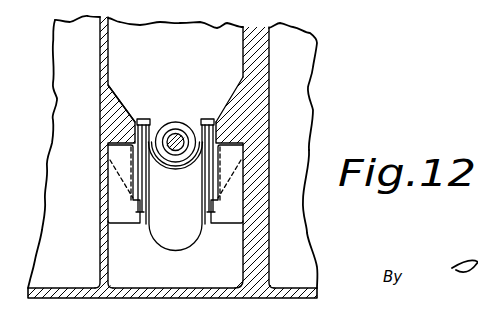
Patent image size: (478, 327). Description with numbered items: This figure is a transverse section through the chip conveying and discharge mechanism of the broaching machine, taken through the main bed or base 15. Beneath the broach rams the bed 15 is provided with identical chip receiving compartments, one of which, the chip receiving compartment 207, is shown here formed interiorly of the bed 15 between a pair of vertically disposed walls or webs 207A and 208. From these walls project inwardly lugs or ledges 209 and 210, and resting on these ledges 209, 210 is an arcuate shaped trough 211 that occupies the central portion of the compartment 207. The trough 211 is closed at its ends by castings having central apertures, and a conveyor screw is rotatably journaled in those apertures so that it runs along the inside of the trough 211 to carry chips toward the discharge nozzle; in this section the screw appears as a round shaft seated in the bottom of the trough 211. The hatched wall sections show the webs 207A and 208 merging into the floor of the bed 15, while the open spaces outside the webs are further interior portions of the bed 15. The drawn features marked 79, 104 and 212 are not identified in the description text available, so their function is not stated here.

The main bed or base 15 is at (294, 266).
The housing top edge 79 is at (162, 3).
The partition wall top 104 is at (116, 6).
The chip receiving compartment 207 is at (210, 37).
The wall or web 207A is at (105, 61).
The wall or web 208 is at (262, 77).
The lug or ledge 209 is at (103, 137).
The lug or ledge 210 is at (214, 130).
The arcuate shaped trough 211 is at (178, 247).
The bearing and shaft 212 is at (178, 124).